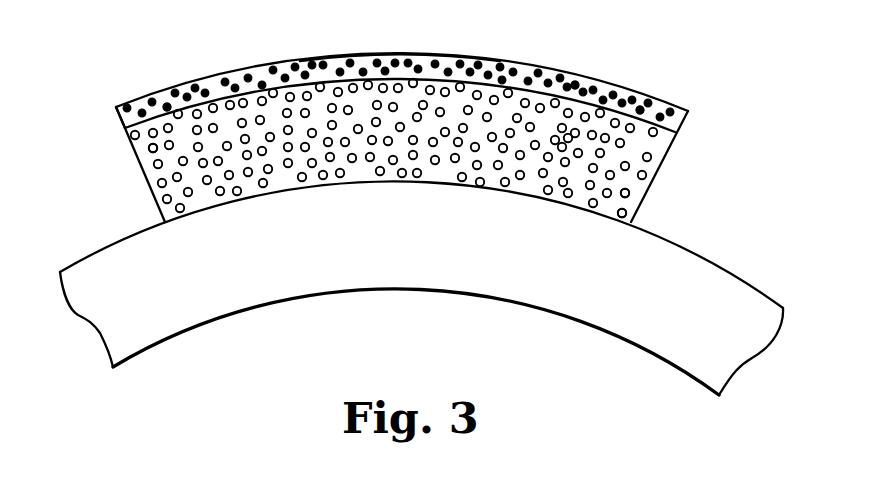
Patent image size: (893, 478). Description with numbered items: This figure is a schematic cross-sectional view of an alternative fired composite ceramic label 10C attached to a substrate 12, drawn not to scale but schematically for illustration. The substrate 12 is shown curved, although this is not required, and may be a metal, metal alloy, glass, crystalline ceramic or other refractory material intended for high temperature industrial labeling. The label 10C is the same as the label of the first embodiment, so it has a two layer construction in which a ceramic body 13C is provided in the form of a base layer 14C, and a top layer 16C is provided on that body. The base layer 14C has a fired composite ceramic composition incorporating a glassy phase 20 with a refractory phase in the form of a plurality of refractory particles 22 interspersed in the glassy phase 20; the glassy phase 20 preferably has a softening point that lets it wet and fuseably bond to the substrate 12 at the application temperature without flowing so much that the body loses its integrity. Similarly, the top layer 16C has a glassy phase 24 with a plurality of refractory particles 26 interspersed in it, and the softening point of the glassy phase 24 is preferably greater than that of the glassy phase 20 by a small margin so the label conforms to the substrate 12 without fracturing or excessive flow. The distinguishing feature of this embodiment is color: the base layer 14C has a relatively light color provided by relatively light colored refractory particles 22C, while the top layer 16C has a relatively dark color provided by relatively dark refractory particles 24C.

The label 10C is at (633, 80).
The substrate 12 is at (708, 278).
The coating 13C is at (684, 150).
The base layer 14C is at (636, 188).
The top layer 16C is at (117, 117).
The glassy phase 20 is at (140, 150).
The refractory particles 22 is at (165, 199).
The light colored refractory particles 22C is at (627, 214).
The glassy phase 24 is at (529, 70).
The dark refractory particles 24C is at (317, 58).
The refractory particles 26 is at (167, 104).